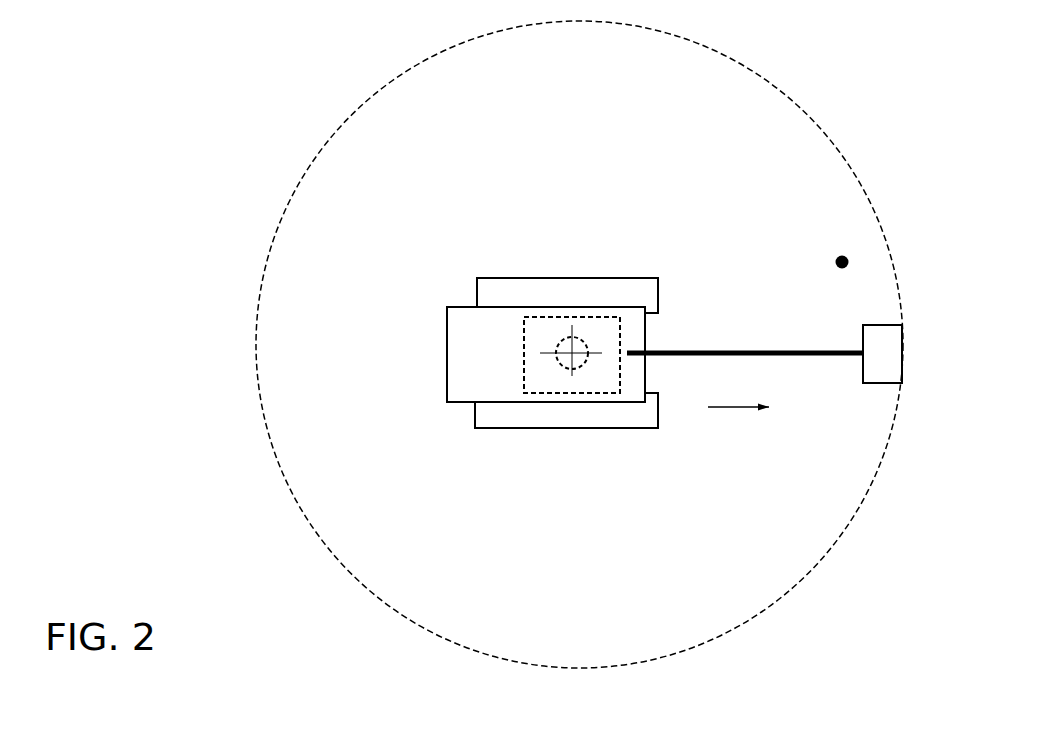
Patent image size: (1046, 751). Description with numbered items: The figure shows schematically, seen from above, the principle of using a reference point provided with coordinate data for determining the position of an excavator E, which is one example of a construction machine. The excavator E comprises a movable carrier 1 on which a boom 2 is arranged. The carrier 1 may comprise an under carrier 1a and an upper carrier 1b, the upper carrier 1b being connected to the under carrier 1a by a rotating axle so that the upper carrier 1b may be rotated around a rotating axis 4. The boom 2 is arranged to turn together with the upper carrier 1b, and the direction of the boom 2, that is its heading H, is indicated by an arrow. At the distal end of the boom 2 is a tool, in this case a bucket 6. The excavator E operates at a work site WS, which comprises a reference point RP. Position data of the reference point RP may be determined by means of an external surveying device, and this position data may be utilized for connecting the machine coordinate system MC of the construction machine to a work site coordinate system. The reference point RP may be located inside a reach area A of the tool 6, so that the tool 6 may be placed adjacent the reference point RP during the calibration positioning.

The movable carrier 1 is at (507, 357).
The under carrier 1a is at (520, 338).
The upper carrier 1b is at (470, 373).
The boom 2 is at (765, 350).
The rotating axis 4 is at (572, 353).
The bucket 6 is at (882, 373).
The reach area A is at (255, 332).
The work site WS is at (400, 241).
The excavator E is at (520, 219).
The reference point RP is at (835, 263).
The heading H is at (738, 390).
The machine coordinate system MC is at (587, 78).